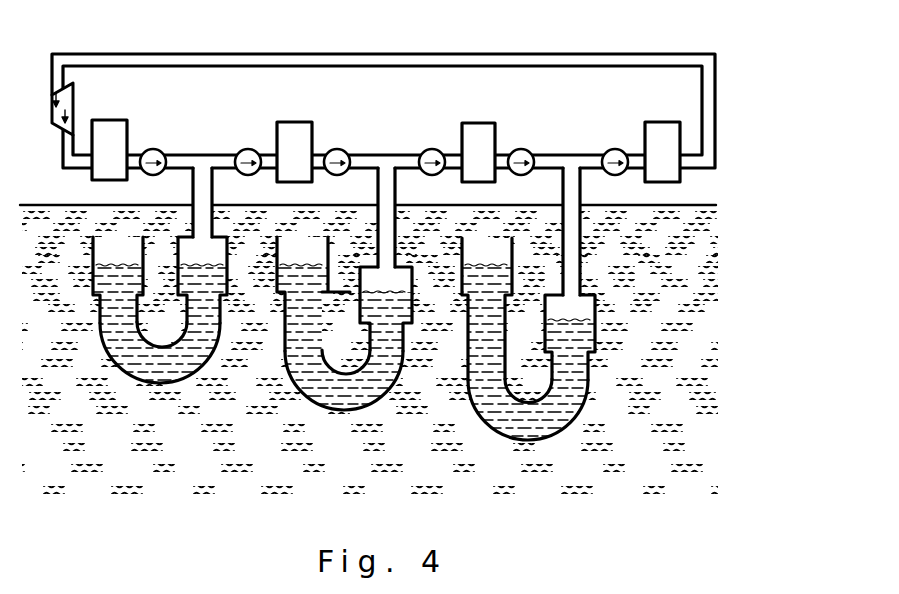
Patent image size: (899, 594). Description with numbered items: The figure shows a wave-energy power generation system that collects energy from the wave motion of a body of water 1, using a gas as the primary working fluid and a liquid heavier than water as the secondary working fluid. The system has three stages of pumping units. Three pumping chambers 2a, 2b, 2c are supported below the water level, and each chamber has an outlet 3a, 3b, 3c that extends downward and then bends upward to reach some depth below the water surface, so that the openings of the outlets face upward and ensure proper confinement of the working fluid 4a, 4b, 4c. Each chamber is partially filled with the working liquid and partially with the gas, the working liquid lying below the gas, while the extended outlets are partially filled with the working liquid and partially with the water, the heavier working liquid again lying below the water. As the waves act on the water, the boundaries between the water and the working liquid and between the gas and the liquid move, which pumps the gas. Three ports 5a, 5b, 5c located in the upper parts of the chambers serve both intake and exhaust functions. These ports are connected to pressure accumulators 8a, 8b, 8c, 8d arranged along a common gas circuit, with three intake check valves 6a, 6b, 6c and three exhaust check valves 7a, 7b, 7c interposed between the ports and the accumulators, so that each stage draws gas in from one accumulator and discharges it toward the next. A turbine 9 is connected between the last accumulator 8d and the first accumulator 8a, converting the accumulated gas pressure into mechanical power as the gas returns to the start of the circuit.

The body of water 1 is at (72, 425).
The pumping chamber 2a is at (197, 261).
The pumping chamber 2b is at (381, 291).
The pumping chamber 2c is at (564, 318).
The outlet 3a is at (118, 280).
The outlet 3b is at (313, 294).
The outlet 3c is at (487, 309).
The working fluid 4a is at (196, 328).
The working fluid 4b is at (381, 353).
The working fluid 4c is at (564, 379).
The port 5a is at (205, 235).
The port 5b is at (388, 262).
The port 5c is at (575, 290).
The intake check valve 6a is at (155, 149).
The intake check valve 6b is at (340, 149).
The intake check valve 6c is at (523, 149).
The exhaust check valve 7a is at (252, 149).
The exhaust check valve 7b is at (436, 149).
The exhaust check valve 7c is at (619, 149).
The pressure accumulator 8a is at (100, 120).
The pressure accumulator 8b is at (290, 122).
The pressure accumulator 8c is at (480, 123).
The pressure accumulator 8d is at (666, 122).
The turbine 9 is at (52, 110).